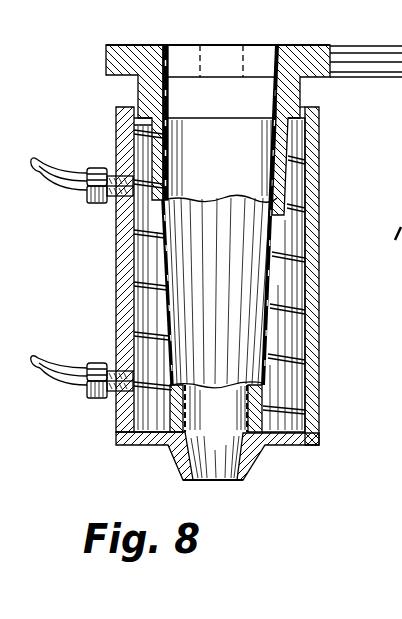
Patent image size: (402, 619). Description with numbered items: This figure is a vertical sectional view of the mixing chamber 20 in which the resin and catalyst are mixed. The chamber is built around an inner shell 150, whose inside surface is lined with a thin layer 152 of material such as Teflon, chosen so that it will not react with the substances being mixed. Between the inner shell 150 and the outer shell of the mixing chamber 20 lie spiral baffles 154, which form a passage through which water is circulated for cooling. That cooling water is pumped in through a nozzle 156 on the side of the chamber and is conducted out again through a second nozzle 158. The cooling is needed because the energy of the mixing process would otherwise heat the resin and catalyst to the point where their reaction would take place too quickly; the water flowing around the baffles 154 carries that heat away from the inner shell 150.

The mixing chamber 20 is at (116, 294).
The inner shell 150 is at (283, 111).
The thin layer of material 152 is at (273, 91).
The spiral baffles 154 is at (305, 162).
The nozzle 156 is at (92, 204).
The second nozzle 158 is at (93, 399).